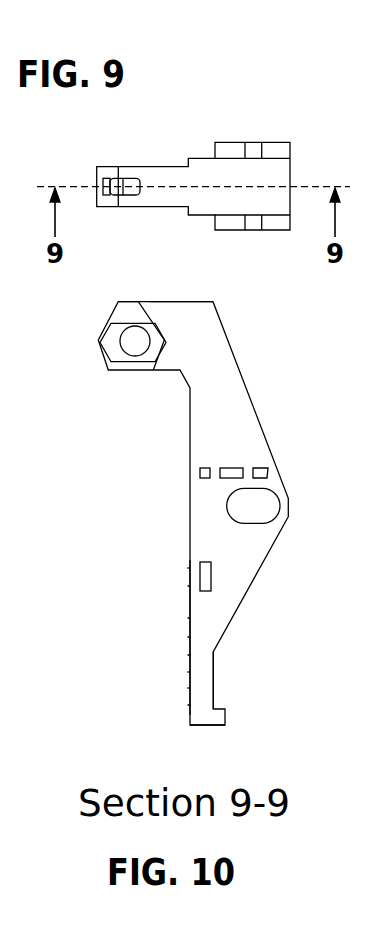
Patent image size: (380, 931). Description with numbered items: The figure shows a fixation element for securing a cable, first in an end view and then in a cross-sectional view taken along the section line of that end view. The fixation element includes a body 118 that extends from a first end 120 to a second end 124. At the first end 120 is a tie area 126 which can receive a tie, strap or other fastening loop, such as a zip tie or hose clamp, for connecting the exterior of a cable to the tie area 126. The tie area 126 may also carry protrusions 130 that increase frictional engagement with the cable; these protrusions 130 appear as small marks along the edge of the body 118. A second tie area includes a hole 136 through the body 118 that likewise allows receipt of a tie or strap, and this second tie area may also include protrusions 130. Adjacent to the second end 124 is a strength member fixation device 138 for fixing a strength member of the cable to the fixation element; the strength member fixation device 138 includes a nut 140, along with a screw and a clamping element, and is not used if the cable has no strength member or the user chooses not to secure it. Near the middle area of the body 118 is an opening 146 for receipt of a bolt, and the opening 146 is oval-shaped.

In FIG. 9, the body 118 is at (193, 186).
In FIG. 10, the body 118 is at (247, 392).
In FIG. 10, the first end 120 is at (203, 717).
In FIG. 10, the second end 124 is at (188, 302).
In FIG. 10, the tie area 126 is at (205, 683).
In FIG. 10, the protrusions 130 is at (188, 586).
In FIG. 10, the hole 136 is at (210, 582).
In FIG. 9, the strength member fixation device 138 is at (100, 175).
In FIG. 10, the strength member fixation device 138 is at (128, 302).
In FIG. 9, the nut 140 is at (116, 184).
In FIG. 10, the nut 140 is at (122, 328).
In FIG. 10, the opening 146 is at (268, 522).